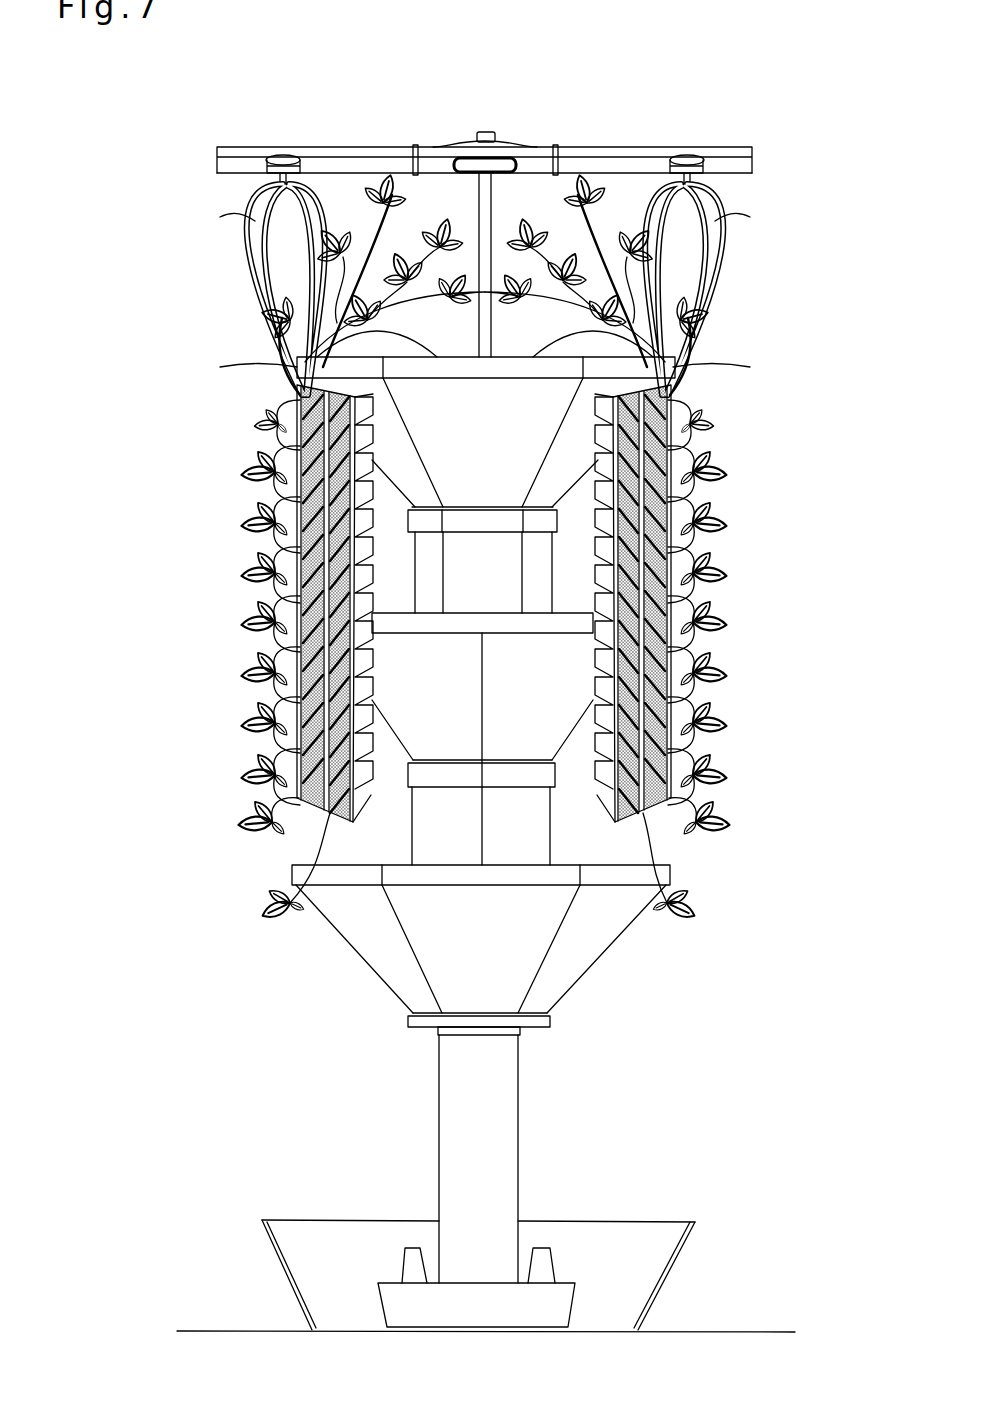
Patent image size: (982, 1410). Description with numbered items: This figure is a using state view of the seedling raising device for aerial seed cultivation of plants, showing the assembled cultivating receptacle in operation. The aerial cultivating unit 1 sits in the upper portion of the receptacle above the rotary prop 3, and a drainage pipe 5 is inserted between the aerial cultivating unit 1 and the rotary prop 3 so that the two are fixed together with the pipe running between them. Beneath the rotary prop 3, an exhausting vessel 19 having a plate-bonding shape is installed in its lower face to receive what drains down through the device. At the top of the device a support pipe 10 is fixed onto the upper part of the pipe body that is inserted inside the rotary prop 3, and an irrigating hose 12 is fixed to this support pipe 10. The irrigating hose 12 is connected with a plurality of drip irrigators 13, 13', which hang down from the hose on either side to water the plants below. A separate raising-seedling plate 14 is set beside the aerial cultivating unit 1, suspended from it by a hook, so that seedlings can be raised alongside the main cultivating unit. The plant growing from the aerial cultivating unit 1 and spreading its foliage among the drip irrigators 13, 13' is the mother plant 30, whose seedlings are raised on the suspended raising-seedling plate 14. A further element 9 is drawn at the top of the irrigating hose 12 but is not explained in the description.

The aerial cultivating unit 1 is at (308, 371).
The rotary prop 3 is at (560, 1303).
The drainage pipe 5 is at (510, 1170).
The sprinkler nozzle 9 is at (483, 130).
The support pipe 10 is at (372, 167).
The irrigating hose 12 is at (332, 152).
The drip irrigator 13 is at (231, 289).
The drip irrigator 13' is at (758, 289).
The raising-seedling plate 14 is at (663, 462).
The exhausting vessel 19 is at (285, 1272).
The mother plant 30 is at (640, 290).